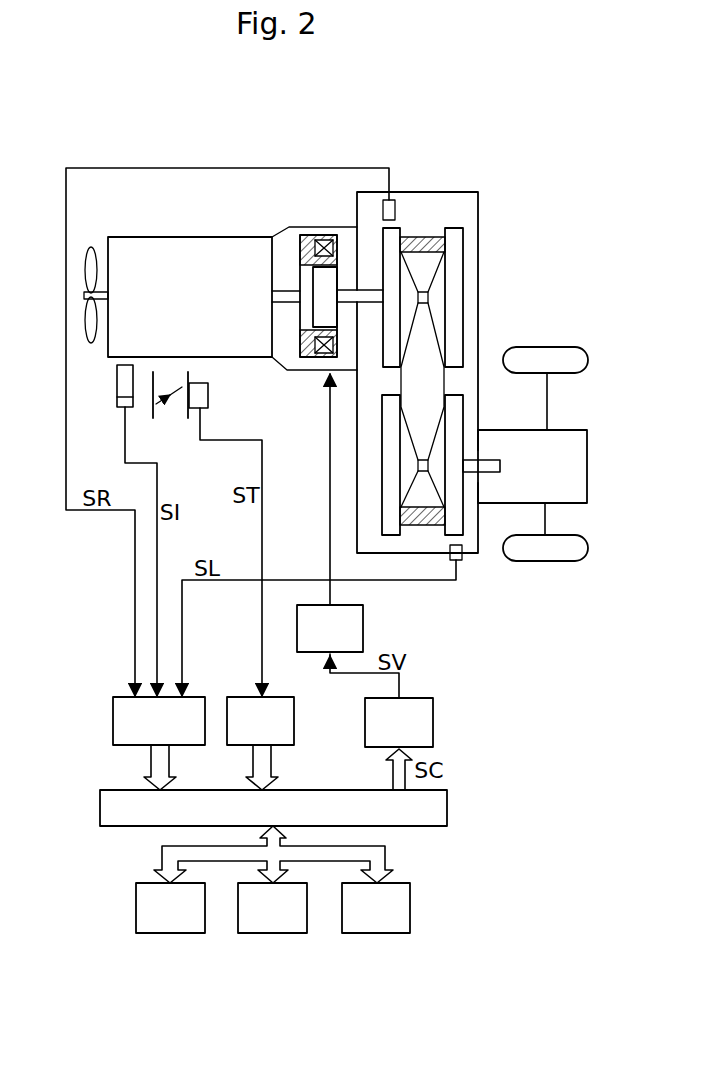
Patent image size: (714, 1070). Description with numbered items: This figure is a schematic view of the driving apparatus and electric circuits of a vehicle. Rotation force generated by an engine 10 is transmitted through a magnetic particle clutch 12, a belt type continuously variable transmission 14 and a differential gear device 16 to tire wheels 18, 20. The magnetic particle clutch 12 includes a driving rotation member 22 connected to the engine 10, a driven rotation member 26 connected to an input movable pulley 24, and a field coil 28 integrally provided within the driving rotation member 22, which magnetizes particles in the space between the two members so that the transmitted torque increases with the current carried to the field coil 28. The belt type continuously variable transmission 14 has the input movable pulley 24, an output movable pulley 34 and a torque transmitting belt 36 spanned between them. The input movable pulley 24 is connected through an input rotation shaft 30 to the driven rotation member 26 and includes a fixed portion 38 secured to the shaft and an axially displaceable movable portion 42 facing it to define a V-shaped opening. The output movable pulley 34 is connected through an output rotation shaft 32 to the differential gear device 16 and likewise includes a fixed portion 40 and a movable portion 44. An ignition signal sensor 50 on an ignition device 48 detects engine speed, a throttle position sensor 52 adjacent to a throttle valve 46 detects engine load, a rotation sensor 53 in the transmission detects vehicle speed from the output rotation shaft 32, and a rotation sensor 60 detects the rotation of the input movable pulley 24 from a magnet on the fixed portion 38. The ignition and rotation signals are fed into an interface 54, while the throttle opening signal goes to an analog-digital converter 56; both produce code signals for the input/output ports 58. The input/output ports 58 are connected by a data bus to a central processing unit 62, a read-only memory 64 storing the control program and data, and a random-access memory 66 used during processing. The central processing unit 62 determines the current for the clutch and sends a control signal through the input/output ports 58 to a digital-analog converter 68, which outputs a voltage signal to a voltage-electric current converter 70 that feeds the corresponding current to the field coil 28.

The engine 10 is at (170, 250).
The magnetic particle clutch 12 is at (285, 224).
The belt type continuously variable transmission 14 is at (483, 217).
The differential gear device 16 is at (575, 452).
The tire wheel 18 is at (566, 349).
The tire wheel 20 is at (573, 543).
The driving rotation member 22 is at (303, 246).
The input movable pulley 24 is at (466, 287).
The driven rotation member 26 is at (337, 280).
The field coil 28 is at (318, 345).
The input rotation shaft 30 is at (368, 290).
The output rotation shaft 32 is at (495, 464).
The output movable pulley 34 is at (378, 474).
The torque transmitting belt 36 is at (428, 386).
The fixed portion 38 is at (392, 372).
The fixed portion 40 is at (457, 417).
The movable portion 42 is at (455, 236).
The movable portion 44 is at (383, 431).
The throttle valve 46 is at (168, 412).
The ignition device 48 is at (122, 377).
The ignition signal sensor 50 is at (122, 401).
The throttle position sensor 52 is at (209, 395).
The rotation sensor 53 is at (464, 556).
The interface 54 is at (115, 707).
The analog-digital converter 56 is at (295, 707).
The input/output ports 58 is at (447, 814).
The rotation sensor 60 is at (396, 210).
The central processing unit 62 is at (184, 934).
The read-only memory 64 is at (289, 934).
The random-access memory 66 is at (400, 934).
The digital-analog converter 68 is at (433, 708).
The voltage-electric current converter 70 is at (363, 618).